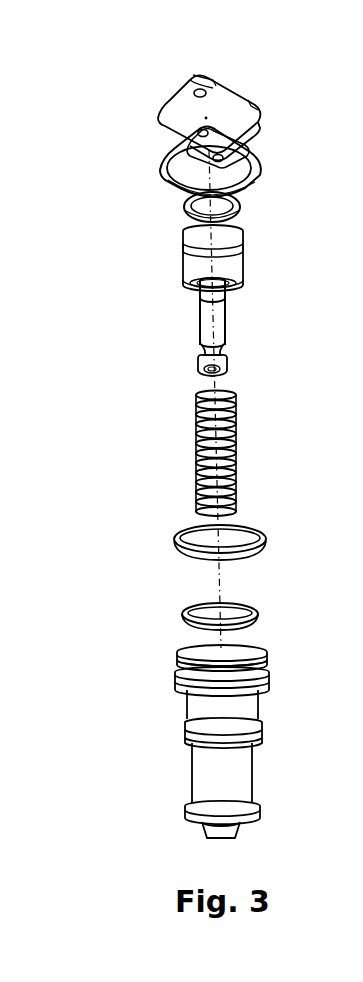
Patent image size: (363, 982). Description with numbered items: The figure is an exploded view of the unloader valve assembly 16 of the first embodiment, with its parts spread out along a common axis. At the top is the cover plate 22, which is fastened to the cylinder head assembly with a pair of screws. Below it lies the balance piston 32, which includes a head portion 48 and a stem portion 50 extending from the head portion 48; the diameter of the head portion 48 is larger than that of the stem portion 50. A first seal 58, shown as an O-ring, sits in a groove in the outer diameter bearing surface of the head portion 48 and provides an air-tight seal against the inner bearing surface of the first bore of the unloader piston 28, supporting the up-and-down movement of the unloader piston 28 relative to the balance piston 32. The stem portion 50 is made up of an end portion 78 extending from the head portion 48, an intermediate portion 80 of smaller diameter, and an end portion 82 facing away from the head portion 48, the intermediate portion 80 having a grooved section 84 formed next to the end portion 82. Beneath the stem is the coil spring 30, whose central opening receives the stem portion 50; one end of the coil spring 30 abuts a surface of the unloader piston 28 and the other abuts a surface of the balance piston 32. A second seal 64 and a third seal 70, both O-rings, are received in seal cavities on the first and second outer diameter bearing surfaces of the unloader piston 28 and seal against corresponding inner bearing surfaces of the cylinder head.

The unloader valve assembly 16 is at (148, 78).
The cover plate 22 is at (168, 121).
The first seal 58 is at (183, 207).
The head portion 48 is at (190, 240).
The balance piston 32 is at (172, 318).
The stem portion 50 is at (288, 282).
The end portion 78 is at (226, 290).
The intermediate portion 80 is at (215, 318).
The grooved section 84 is at (222, 345).
The end portion 82 is at (222, 362).
The coil spring 30 is at (197, 449).
The second seal 64 is at (178, 540).
The third seal 70 is at (185, 615).
The unloader piston 28 is at (197, 772).